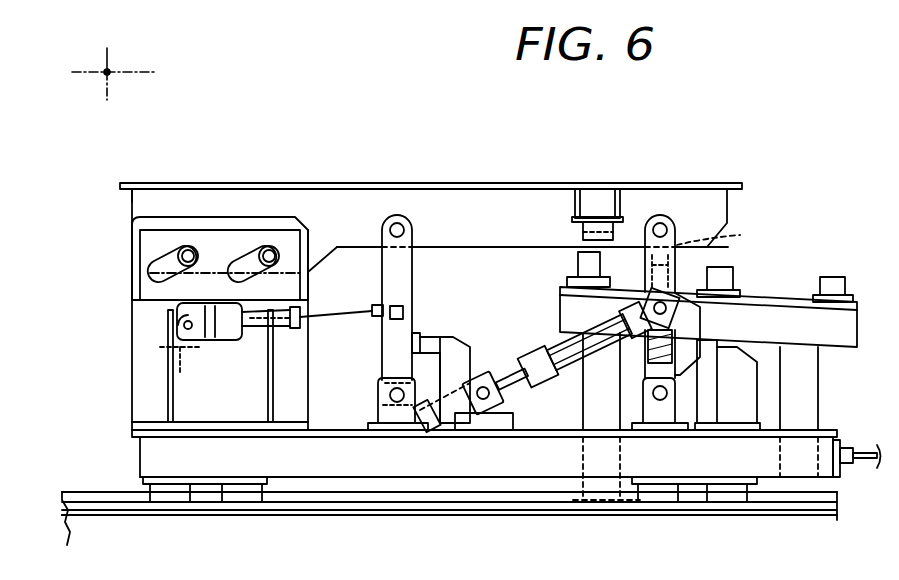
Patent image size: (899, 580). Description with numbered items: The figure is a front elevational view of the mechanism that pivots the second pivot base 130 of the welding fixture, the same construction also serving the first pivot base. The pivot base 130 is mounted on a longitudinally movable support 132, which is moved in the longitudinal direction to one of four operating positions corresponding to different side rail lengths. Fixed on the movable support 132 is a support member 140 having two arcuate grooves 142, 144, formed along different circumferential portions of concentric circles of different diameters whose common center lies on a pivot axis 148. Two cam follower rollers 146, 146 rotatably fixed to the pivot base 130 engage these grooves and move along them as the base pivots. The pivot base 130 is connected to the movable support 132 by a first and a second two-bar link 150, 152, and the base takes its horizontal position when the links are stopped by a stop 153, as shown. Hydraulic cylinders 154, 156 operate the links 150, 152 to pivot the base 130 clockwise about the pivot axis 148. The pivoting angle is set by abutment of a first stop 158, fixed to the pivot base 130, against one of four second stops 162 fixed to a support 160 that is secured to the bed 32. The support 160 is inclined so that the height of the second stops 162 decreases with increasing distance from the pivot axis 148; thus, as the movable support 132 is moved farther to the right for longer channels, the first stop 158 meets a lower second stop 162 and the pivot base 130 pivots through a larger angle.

The bed 32 is at (557, 559).
The second pivot base 130 is at (710, 200).
The longitudinally movable support 132 is at (432, 470).
The support member 140 is at (143, 290).
The arcuate groove 142 is at (153, 268).
The arcuate groove 144 is at (240, 262).
The cam follower rollers 146 is at (186, 246).
The pivot axis 148 is at (110, 70).
The first two-bar link 150 is at (403, 277).
The second two-bar link 152 is at (683, 325).
The stop 153 is at (460, 353).
The hydraulic cylinder 154 is at (225, 328).
The hydraulic cylinder 156 is at (513, 387).
The first stop 158 is at (583, 234).
The support 160 is at (567, 313).
The second stops 162 is at (580, 263).